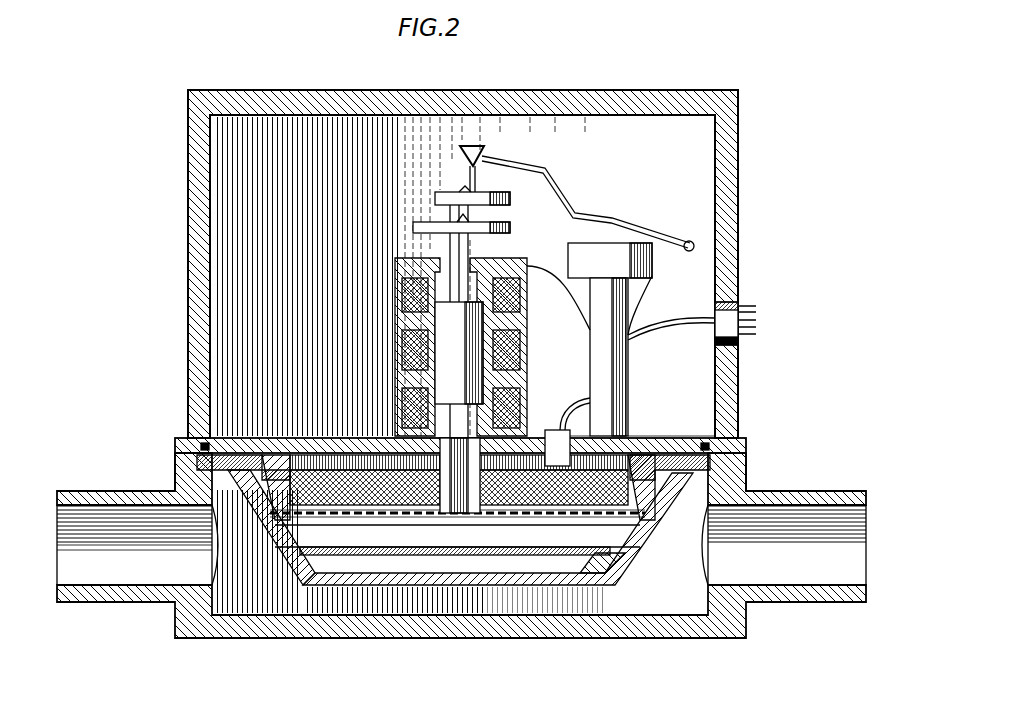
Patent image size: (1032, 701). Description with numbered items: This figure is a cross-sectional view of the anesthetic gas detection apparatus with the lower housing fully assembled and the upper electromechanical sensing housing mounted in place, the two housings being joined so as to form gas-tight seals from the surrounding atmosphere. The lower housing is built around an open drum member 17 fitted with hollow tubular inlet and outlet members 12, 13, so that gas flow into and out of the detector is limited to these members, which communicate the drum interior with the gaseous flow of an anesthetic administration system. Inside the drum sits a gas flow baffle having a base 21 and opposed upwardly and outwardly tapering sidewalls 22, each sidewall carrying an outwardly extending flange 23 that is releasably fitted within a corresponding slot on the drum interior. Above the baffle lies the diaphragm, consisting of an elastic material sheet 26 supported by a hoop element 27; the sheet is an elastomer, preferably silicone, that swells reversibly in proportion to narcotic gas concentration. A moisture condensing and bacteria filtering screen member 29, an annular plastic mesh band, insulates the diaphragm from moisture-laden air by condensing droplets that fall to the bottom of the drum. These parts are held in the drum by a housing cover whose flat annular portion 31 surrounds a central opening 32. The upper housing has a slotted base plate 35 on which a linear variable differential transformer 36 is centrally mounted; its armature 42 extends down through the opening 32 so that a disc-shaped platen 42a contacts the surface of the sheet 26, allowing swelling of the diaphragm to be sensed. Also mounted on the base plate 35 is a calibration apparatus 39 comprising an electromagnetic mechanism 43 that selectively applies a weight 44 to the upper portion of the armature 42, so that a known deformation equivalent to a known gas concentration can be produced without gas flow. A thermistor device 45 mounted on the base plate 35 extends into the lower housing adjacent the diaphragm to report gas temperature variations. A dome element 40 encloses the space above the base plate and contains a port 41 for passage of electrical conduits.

The inlet member 12 is at (72, 495).
The outlet member 13 is at (850, 496).
The open drum member 17 is at (740, 615).
The base 21 is at (585, 585).
The sidewall 22 is at (290, 560).
The flange 23 is at (720, 478).
The elastic material sheet 26 is at (380, 522).
The hoop element 27 is at (636, 540).
The screen member 29 is at (225, 535).
The flat annular portion 31 is at (200, 462).
The opening 32 is at (300, 440).
The base plate 35 is at (215, 450).
The linear variable differential transformer 36 is at (383, 300).
The calibration apparatus 39 is at (658, 408).
The dome element 40 is at (740, 150).
The port 41 is at (730, 305).
The armature 42 is at (478, 254).
The disc-shaped platen 42a is at (485, 522).
The electromagnetic mechanism 43 is at (652, 270).
The weight 44 is at (503, 185).
The thermistor device 45 is at (556, 430).